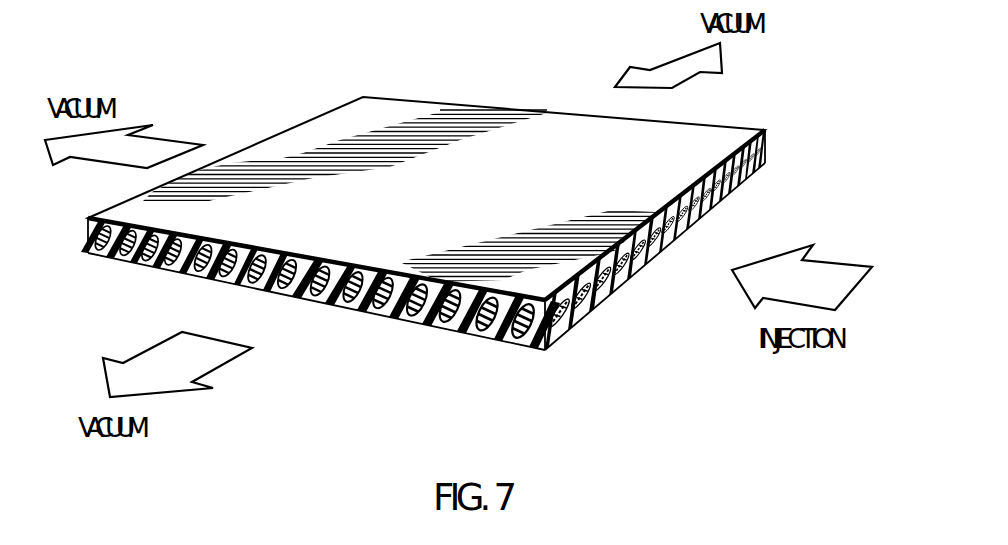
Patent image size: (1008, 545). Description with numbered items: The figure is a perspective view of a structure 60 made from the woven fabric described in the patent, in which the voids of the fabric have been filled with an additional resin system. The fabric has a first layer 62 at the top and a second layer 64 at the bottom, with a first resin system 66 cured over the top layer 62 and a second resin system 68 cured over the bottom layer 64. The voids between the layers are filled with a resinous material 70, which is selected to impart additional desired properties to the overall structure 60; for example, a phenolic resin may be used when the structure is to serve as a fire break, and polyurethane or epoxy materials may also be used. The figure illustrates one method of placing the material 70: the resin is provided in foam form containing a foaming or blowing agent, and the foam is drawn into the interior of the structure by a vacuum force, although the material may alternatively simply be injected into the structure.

The structure 60 is at (423, 228).
The first layer 62 is at (463, 108).
The second layer 64 is at (330, 305).
The first resin system 66 is at (679, 130).
The second resin system 68 is at (543, 349).
The resinous material 70 is at (148, 257).